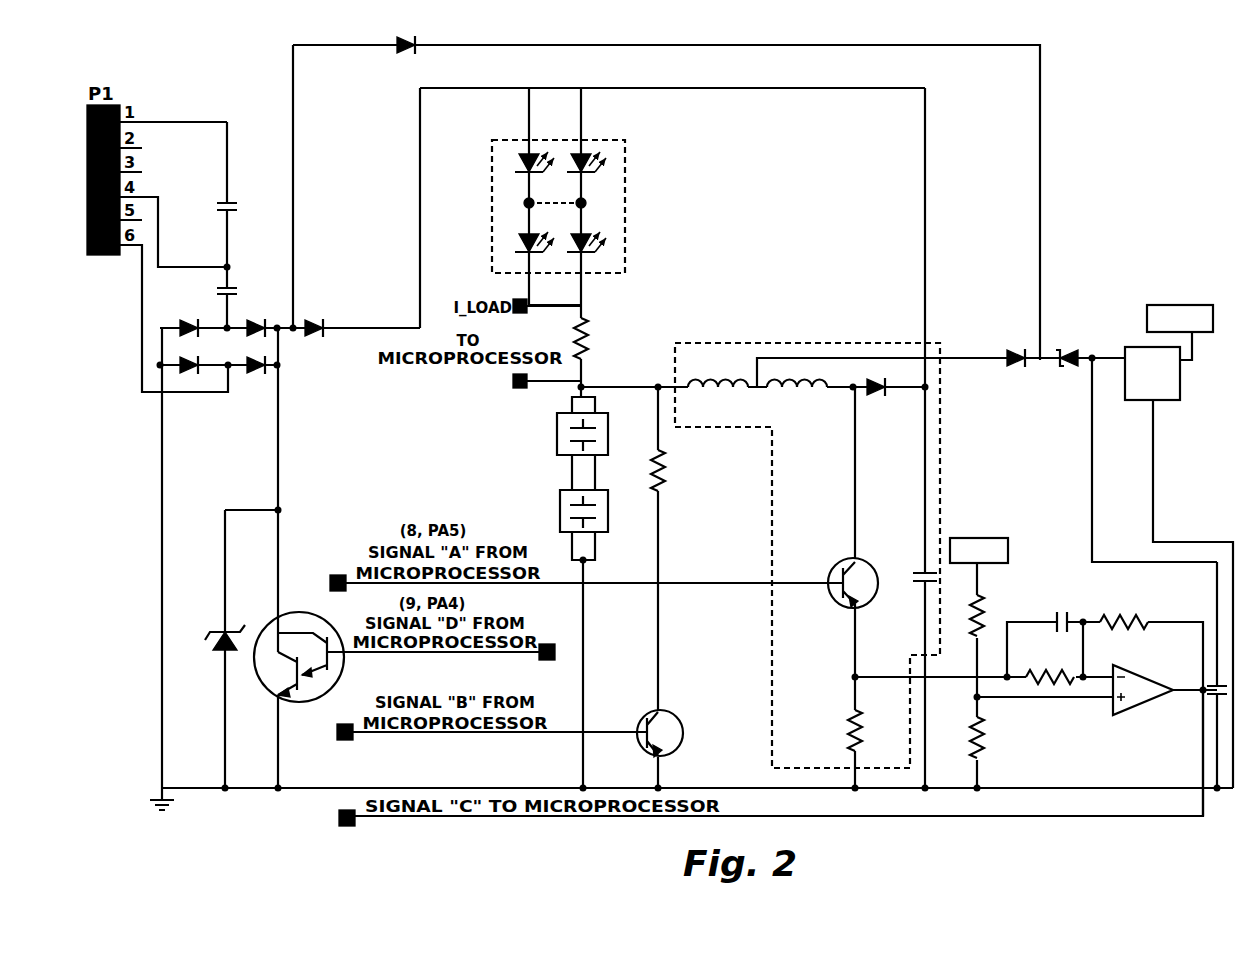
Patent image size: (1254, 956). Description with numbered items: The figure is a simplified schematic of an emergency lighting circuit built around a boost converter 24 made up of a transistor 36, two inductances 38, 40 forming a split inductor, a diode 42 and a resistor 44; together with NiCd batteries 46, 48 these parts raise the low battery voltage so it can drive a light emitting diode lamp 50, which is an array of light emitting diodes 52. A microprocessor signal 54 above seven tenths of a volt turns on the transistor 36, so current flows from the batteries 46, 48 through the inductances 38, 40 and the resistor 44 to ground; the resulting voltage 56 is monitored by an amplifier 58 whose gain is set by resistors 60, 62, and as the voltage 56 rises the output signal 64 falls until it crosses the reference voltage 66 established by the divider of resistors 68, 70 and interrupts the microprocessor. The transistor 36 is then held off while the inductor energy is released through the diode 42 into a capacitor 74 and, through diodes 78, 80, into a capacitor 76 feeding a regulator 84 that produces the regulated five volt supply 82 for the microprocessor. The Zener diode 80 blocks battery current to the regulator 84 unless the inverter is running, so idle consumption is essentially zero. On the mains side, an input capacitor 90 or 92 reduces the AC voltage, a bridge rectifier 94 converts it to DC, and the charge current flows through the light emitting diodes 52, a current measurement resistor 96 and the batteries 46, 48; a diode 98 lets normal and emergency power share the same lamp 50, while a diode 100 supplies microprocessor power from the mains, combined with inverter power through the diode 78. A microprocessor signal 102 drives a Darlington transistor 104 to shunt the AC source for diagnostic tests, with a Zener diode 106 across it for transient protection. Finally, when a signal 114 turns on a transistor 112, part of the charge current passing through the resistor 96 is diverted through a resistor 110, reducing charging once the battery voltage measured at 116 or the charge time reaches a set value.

The boost converter 24 is at (840, 340).
The transistor 36 is at (826, 569).
The inductance 38 is at (714, 395).
The inductance 40 is at (808, 396).
The diode 42 is at (890, 401).
The resistor 44 is at (836, 730).
The battery 46 is at (557, 503).
The battery 48 is at (554, 428).
The light emitting diode lamp 50 is at (630, 169).
The light emitting diodes 52 is at (503, 207).
The signal 54 is at (333, 574).
The voltage 56 is at (866, 683).
The amplifier 58 is at (1138, 713).
The resistor 60 is at (1123, 606).
The resistor 62 is at (1048, 660).
The signal 64 is at (337, 818).
The voltage 66 is at (990, 707).
The resistor 68 is at (990, 614).
The resistor 70 is at (992, 755).
The capacitor 74 is at (916, 569).
The capacitor 76 is at (1215, 681).
The diode 78 is at (1021, 343).
The Zener diode 80 is at (1068, 338).
The five volt power supply voltage 82 is at (1181, 300).
The regulator 84 is at (1176, 410).
The capacitor 90 is at (236, 203).
The capacitor 92 is at (241, 282).
The bridge rectifier 94 is at (172, 316).
The current measurement resistor 96 is at (598, 326).
The diode 98 is at (327, 318).
The diode 100 is at (386, 68).
The microprocessor signal 102 is at (556, 644).
The Darlington transistor 104 is at (350, 672).
The Zener diode 106 is at (206, 632).
The resistor 110 is at (675, 470).
The transistor 112 is at (689, 728).
The signal 114 is at (356, 740).
The battery voltage measurement point 116 is at (486, 396).